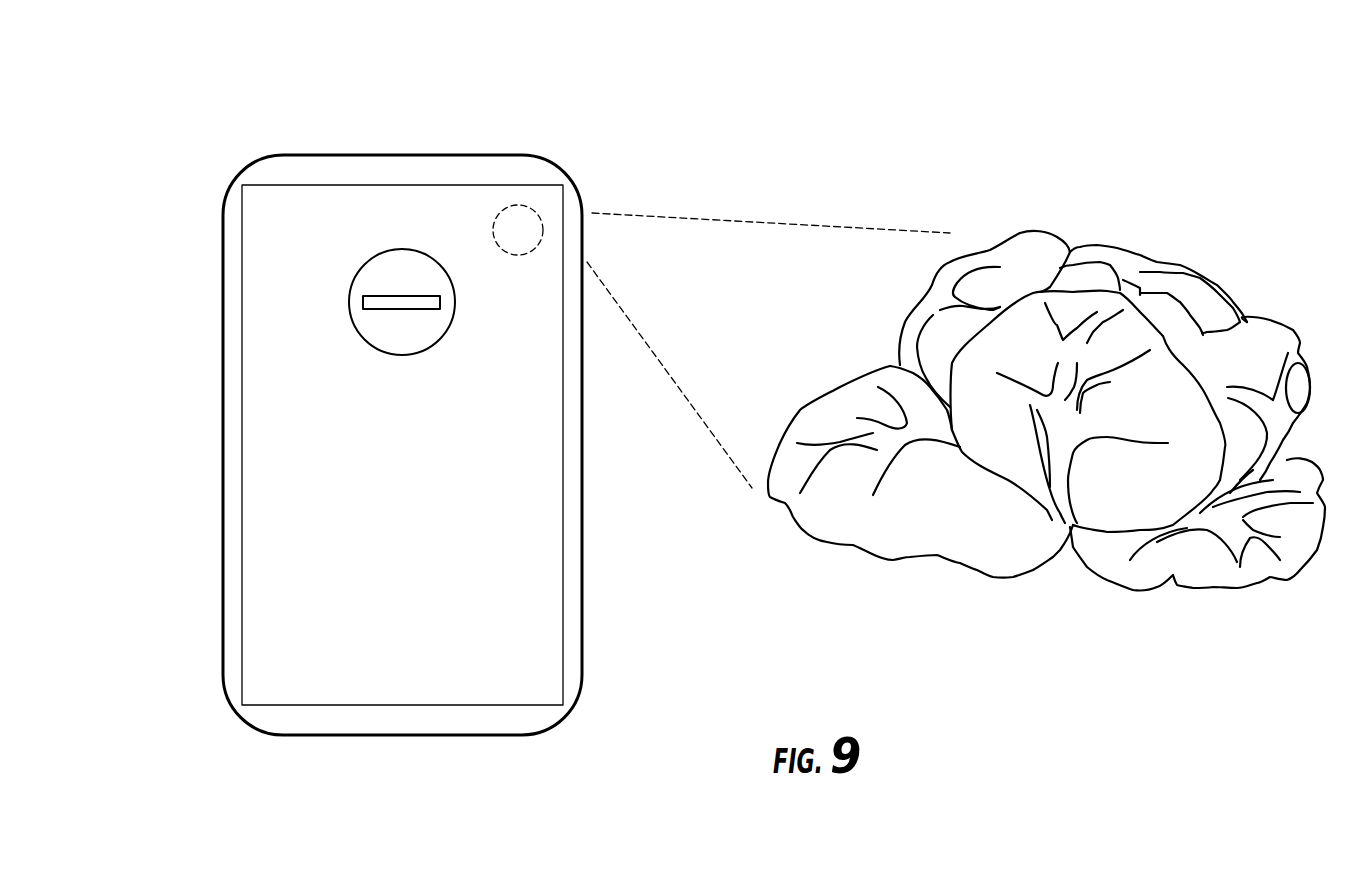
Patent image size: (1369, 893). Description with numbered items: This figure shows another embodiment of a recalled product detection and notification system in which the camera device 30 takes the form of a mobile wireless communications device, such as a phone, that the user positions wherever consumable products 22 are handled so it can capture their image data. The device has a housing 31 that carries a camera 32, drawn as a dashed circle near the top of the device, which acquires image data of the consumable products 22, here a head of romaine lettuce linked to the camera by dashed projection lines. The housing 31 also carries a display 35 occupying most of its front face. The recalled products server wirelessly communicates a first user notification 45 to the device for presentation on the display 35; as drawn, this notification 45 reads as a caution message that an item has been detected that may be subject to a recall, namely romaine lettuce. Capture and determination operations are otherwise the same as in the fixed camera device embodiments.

The camera device 30 is at (287, 100).
The housing 31 is at (233, 183).
The display 35 is at (263, 307).
The camera 32 is at (536, 202).
The first user notification 45 is at (350, 430).
The consumable products 22 is at (1032, 252).